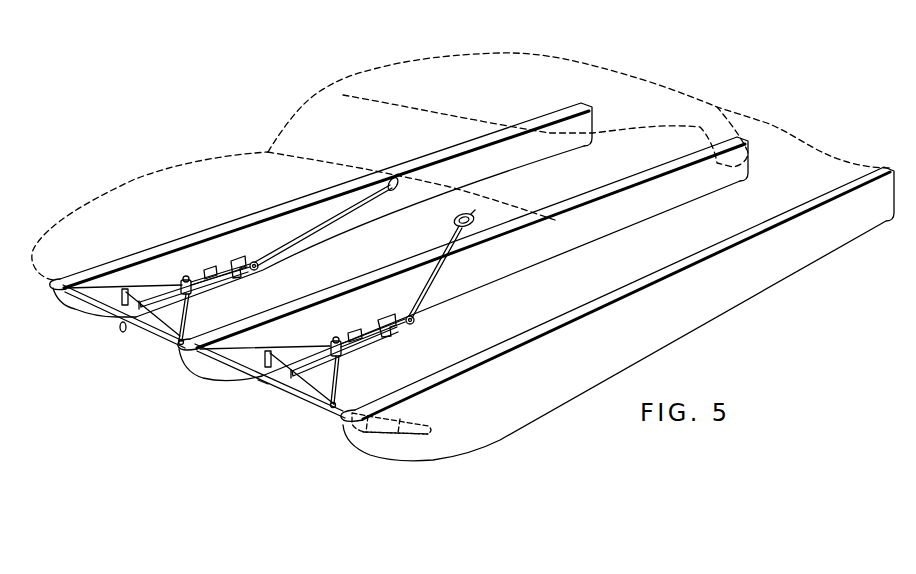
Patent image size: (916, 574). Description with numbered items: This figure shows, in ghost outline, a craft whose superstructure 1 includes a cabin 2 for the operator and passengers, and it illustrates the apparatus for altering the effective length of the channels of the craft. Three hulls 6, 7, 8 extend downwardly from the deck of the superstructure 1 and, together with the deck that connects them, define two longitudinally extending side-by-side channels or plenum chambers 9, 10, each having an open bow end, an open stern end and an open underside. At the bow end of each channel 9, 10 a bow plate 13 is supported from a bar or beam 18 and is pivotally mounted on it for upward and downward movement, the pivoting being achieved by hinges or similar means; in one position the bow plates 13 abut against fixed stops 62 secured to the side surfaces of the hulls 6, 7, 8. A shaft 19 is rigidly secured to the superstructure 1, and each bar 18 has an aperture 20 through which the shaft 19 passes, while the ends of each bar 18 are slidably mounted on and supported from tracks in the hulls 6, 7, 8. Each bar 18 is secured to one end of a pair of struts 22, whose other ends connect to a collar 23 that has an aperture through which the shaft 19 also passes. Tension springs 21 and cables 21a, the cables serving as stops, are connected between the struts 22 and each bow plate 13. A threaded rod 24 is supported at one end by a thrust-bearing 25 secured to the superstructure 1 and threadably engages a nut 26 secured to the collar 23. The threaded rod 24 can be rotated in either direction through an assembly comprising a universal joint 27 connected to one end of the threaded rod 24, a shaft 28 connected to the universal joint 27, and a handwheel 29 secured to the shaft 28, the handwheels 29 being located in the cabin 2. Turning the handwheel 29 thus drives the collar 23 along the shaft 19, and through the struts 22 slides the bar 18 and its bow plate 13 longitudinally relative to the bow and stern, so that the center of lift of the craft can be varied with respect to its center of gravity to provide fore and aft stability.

The superstructure 1 is at (168, 157).
The cabin 2 is at (424, 60).
The hull 6 is at (72, 298).
The hull 7 is at (212, 364).
The hull 8 is at (388, 447).
The channel or plenum chamber 9 is at (100, 312).
The channel or plenum chamber 10 is at (283, 398).
The bow plate 13 is at (403, 417).
The bar or beam 18 is at (164, 336).
The shaft 19 is at (149, 306).
The aperture 20 is at (124, 332).
The tension spring 21 is at (123, 300).
The cable 21a is at (122, 325).
The strut 22 is at (147, 283).
The collar 23 is at (188, 279).
The threaded rod 24 is at (205, 291).
The thrust-bearing 25 is at (247, 277).
The nut 26 is at (186, 277).
The universal joint 27 is at (255, 262).
The shaft 28 is at (320, 228).
The handwheel 29 is at (388, 180).
The fixed stop 62 is at (363, 430).